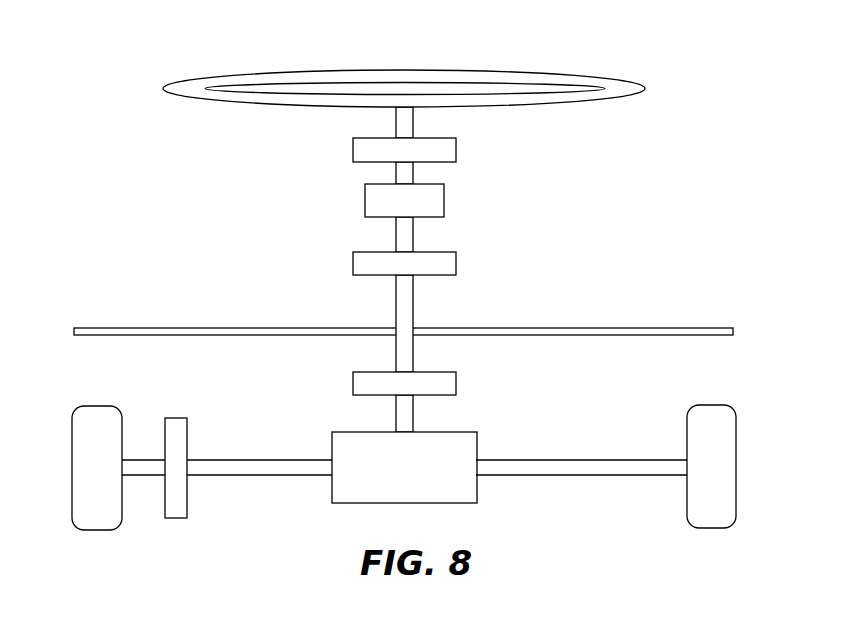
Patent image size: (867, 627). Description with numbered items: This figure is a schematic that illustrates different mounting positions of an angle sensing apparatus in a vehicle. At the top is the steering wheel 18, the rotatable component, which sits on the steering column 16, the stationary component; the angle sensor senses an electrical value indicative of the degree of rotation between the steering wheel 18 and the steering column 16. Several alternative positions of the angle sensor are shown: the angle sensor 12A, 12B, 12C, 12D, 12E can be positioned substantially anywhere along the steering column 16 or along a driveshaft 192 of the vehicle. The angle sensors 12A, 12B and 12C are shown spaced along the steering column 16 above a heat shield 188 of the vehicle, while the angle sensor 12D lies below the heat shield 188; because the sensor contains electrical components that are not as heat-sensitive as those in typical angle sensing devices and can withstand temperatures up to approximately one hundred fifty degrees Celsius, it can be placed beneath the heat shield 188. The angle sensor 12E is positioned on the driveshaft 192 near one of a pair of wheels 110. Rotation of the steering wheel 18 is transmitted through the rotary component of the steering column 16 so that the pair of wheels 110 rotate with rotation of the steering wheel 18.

The steering wheel 18 is at (618, 87).
The steering column 16 is at (404, 313).
The angle sensor 12A is at (440, 153).
The angle sensor 12B is at (429, 203).
The angle sensor 12C is at (443, 267).
The angle sensor 12D is at (440, 380).
The angle sensor 12E is at (180, 445).
The heat shield 188 is at (663, 330).
The driveshaft 192 is at (537, 470).
The wheels 110 is at (97, 440).